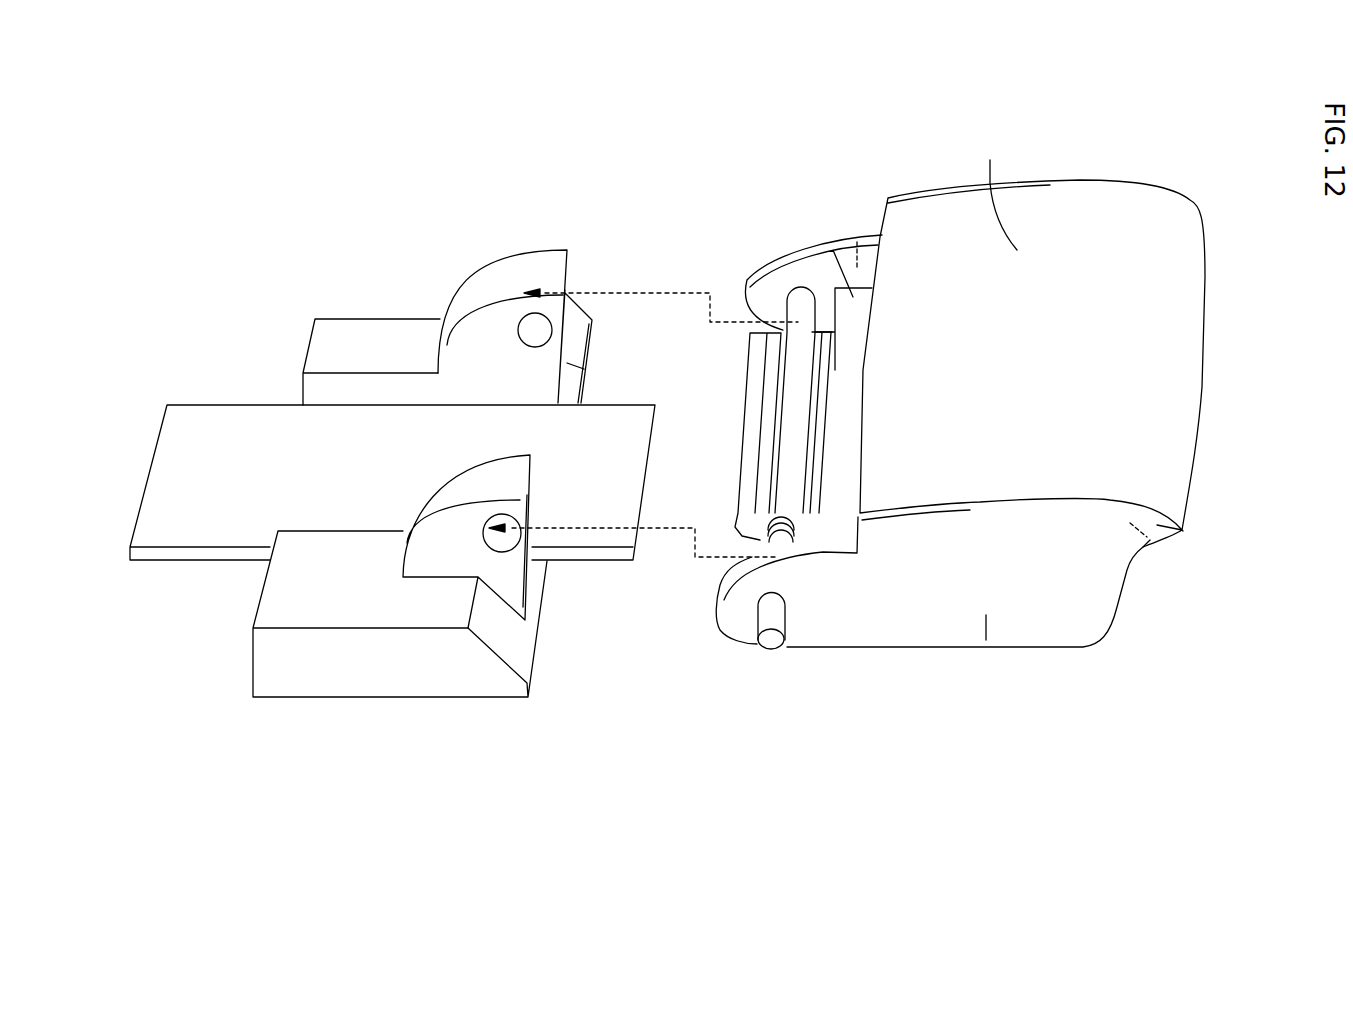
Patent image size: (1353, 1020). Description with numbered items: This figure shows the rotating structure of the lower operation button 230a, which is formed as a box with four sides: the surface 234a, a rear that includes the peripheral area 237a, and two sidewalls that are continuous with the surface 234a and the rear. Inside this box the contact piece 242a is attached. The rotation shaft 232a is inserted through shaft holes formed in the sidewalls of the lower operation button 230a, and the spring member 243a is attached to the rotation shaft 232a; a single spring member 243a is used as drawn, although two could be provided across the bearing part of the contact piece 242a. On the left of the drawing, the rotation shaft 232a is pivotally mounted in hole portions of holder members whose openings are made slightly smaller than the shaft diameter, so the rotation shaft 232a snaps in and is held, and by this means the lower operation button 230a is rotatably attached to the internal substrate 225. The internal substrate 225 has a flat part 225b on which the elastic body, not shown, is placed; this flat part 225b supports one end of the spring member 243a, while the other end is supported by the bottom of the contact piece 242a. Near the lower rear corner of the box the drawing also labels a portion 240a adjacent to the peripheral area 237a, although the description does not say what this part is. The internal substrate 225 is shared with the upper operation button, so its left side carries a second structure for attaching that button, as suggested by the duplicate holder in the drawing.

The internal substrate 225 is at (370, 712).
The flat part 225b is at (158, 467).
The lower operation button 230a is at (1117, 212).
The rotation shaft 232a is at (768, 645).
The surface 234a is at (990, 160).
The peripheral area 237a is at (1150, 540).
The edge portion 240a is at (1182, 530).
The contact piece 242a is at (832, 250).
The spring member 243a is at (723, 572).